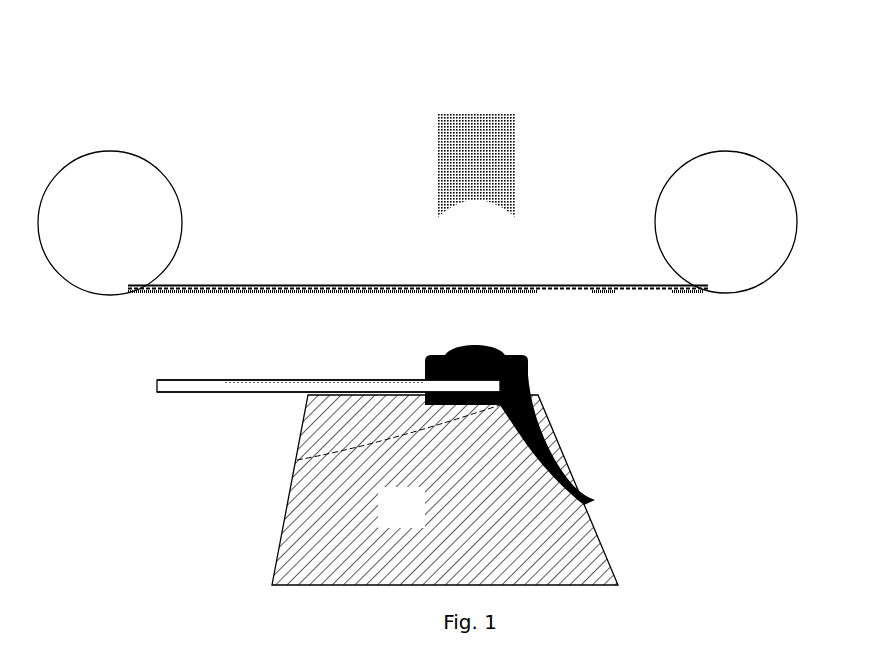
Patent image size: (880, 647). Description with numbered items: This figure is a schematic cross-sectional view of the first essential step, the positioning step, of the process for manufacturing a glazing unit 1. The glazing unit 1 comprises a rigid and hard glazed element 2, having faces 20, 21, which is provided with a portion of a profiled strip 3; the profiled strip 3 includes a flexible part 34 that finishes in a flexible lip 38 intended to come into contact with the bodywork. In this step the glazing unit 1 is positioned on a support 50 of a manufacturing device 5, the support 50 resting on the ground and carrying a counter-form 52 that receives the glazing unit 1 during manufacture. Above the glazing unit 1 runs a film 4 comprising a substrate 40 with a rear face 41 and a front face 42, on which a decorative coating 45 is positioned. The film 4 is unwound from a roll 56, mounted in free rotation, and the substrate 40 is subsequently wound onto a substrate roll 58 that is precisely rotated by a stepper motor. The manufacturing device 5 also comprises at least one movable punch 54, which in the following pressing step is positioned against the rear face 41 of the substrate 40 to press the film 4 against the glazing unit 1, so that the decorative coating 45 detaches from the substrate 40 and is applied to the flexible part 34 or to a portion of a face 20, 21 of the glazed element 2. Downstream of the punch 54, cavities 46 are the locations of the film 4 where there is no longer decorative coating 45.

The glazing unit 1 is at (176, 356).
The glazed element 2 is at (294, 389).
The profiled strip 3 is at (632, 407).
The film 4 is at (264, 267).
The manufacturing device 5 is at (222, 69).
The face of the glazed element 20 is at (200, 380).
The face of the glazed element 21 is at (202, 393).
The flexible part 34 is at (498, 345).
The flexible lip 38 is at (550, 451).
The substrate 40 is at (327, 285).
The rear face 41 is at (565, 285).
The front face 42 is at (557, 292).
The decorative coating 45 is at (280, 292).
The cavities 46 is at (650, 292).
The support 50 is at (436, 490).
The counter-form 52 is at (295, 463).
The punch 54 is at (505, 158).
The roll 56 is at (158, 200).
The substrate roll 58 is at (672, 200).